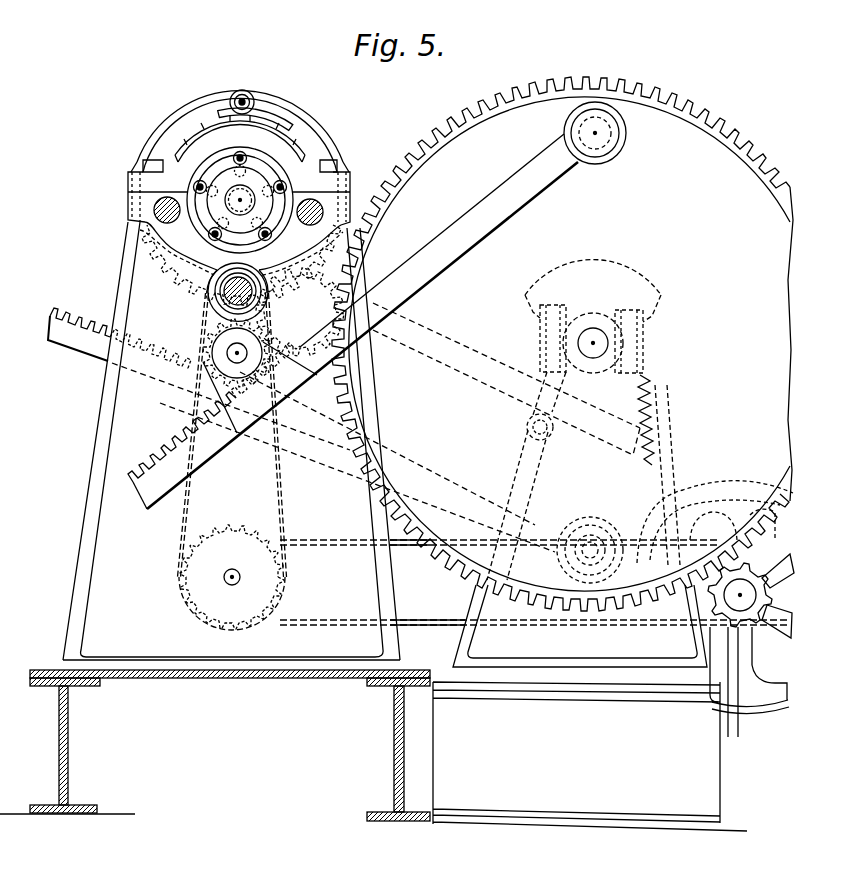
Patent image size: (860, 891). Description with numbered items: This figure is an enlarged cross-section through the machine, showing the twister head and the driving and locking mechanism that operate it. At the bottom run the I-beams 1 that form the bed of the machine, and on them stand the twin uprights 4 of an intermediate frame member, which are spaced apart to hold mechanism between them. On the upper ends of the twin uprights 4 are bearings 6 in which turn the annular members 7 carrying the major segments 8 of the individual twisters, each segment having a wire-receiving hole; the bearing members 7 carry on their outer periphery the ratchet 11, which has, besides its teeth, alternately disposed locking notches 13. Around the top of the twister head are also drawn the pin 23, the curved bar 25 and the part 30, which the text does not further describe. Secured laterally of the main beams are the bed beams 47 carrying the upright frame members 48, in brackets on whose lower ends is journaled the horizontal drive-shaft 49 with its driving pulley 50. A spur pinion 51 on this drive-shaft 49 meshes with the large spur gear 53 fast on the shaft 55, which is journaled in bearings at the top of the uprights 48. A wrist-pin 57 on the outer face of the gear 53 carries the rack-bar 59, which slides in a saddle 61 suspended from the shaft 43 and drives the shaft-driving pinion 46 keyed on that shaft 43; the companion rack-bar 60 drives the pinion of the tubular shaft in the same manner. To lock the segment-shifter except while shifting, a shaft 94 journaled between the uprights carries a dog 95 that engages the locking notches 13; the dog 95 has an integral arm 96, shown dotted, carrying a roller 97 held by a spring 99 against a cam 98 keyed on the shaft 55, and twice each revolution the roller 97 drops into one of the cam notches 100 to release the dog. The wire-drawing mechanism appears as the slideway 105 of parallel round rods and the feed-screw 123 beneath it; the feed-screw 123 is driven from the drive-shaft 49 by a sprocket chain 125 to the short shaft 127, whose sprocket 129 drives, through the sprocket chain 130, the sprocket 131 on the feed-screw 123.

The I-beams 1 is at (68, 740).
The twin uprights 4 is at (107, 407).
The bearings 6 is at (288, 160).
The annular members 7 is at (262, 165).
The major segments 8 is at (239, 150).
The ratchet 11 is at (172, 147).
The locking notches 13 is at (217, 120).
The pin 23 is at (246, 92).
The curved bar 25 is at (275, 120).
The bearing 30 is at (218, 203).
The shaft 43 is at (213, 426).
The shaft-driving pinion 46 is at (228, 347).
The bed beams 47 is at (590, 756).
The upright frame members 48 is at (472, 596).
The drive-shaft 49 is at (745, 606).
The driving pulley 50 is at (765, 697).
The spur pinion 51 is at (733, 730).
The large spur gear 53 is at (745, 126).
The shaft 55 is at (600, 343).
The wrist-pin 57 is at (598, 130).
The rack-bar 59 is at (476, 208).
The rack-bar 60 is at (63, 337).
The saddle 61 is at (318, 378).
The shaft 94 is at (343, 267).
The dog 95 is at (243, 290).
The arm 96 is at (449, 348).
The roller 97 is at (540, 440).
The cam 98 is at (597, 262).
The spring 99 is at (615, 427).
The cam notches 100 is at (540, 345).
The slideway 105 is at (156, 207).
The feed-screw 123 is at (212, 277).
The sprocket chain 125 is at (436, 624).
The short shaft 127 is at (228, 582).
The sprocket 129 is at (229, 530).
The sprocket chain 130 is at (182, 518).
The sprocket 131 is at (215, 293).